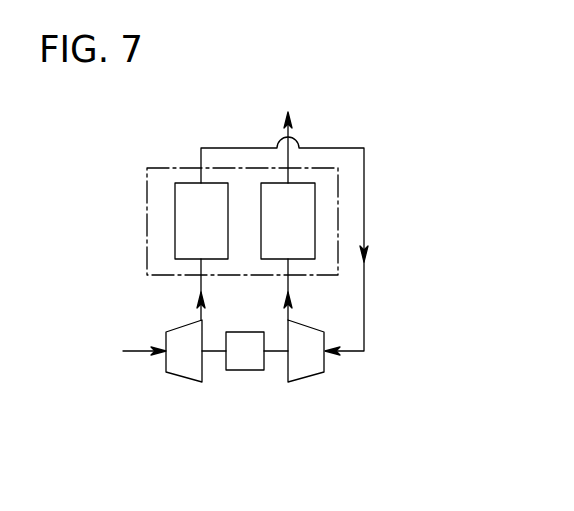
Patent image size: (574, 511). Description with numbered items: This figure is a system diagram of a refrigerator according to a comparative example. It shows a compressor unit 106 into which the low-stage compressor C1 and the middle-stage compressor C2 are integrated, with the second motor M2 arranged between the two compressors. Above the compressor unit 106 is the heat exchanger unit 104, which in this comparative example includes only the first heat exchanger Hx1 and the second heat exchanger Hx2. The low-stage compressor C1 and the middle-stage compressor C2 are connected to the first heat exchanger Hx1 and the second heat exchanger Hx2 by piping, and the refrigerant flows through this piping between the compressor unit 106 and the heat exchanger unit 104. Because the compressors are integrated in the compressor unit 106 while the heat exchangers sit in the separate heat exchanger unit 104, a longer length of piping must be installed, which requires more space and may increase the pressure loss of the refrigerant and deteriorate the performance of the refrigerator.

The heat exchanger unit 104 is at (195, 221).
The compressor unit 106 is at (245, 394).
The first heat exchanger Hx1 is at (201, 221).
The second heat exchanger Hx2 is at (288, 221).
The low-stage compressor C1 is at (184, 351).
The middle-stage compressor C2 is at (306, 351).
The second motor M2 is at (245, 351).